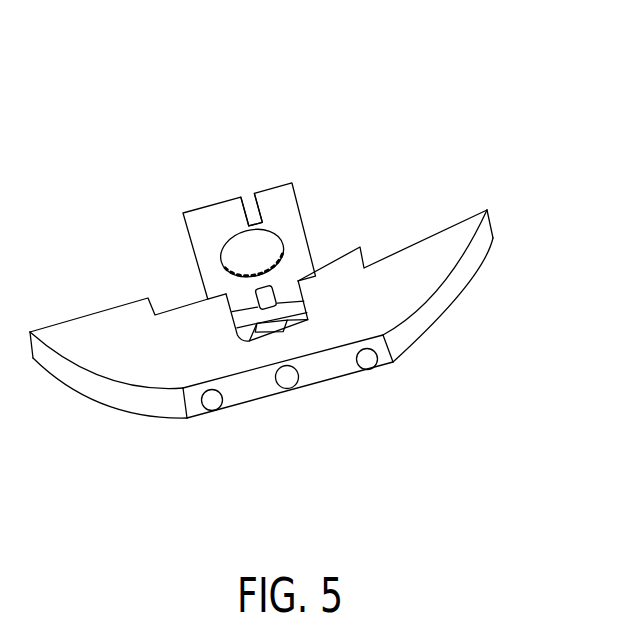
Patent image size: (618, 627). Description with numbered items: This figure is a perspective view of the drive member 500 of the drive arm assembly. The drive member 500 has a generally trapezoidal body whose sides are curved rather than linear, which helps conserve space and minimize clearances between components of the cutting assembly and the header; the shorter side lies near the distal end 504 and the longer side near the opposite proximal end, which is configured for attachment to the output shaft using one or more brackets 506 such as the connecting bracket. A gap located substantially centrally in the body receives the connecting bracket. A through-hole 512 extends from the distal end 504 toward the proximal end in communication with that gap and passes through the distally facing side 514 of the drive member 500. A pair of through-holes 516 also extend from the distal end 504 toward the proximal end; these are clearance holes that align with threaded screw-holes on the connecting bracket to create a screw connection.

The drive member 500 is at (462, 233).
The distal end 504 is at (232, 446).
The brackets 506 is at (333, 174).
The through-hole 512 is at (287, 377).
The distally facing side 514 is at (331, 369).
The through-holes 516 is at (212, 400).